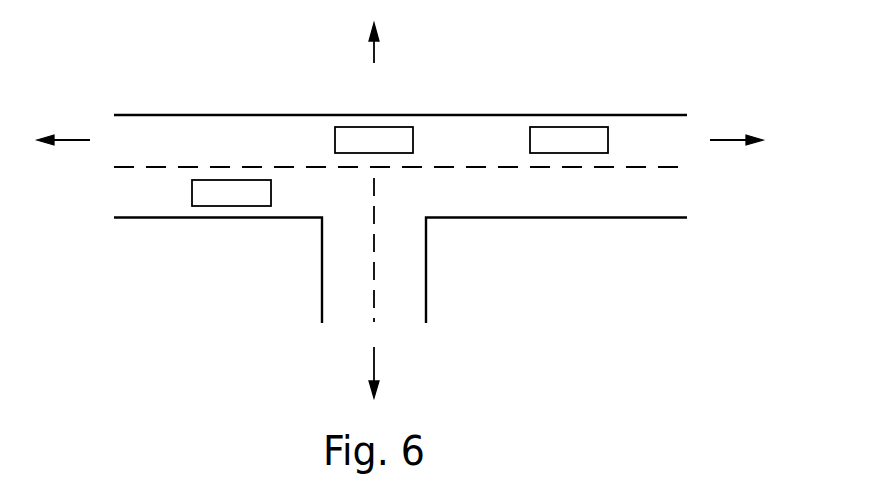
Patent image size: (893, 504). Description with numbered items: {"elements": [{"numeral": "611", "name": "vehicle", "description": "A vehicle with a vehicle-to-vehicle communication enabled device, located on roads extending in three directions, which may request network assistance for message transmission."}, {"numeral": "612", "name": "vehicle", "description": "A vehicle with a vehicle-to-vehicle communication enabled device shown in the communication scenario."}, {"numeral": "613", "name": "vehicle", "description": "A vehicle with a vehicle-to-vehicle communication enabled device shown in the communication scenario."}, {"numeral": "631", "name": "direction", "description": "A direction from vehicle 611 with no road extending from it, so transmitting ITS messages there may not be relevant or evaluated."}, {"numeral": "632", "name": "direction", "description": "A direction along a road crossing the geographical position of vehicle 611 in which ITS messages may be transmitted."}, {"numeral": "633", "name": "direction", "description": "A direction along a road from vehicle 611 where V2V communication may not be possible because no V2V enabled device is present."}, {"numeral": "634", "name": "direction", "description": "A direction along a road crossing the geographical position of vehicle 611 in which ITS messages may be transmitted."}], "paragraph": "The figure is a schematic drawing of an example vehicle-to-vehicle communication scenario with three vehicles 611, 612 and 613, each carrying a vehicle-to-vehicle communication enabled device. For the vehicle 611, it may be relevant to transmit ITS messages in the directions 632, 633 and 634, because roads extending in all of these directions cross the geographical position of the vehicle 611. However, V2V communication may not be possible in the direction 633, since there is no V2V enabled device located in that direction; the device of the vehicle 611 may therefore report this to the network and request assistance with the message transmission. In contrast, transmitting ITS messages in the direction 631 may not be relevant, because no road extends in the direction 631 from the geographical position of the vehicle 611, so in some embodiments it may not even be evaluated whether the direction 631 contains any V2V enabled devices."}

The first vehicle / object on main road 611 is at (374, 140).
The second vehicle / object on main road 612 is at (569, 140).
The third vehicle / object on side lane 613 is at (231, 193).
The upward direction arrow (north) 631 is at (374, 54).
The rightward direction arrow (east) 632 is at (729, 132).
The downward direction arrow (south, branch road) 633 is at (374, 362).
The leftward direction arrow (west) 634 is at (70, 131).